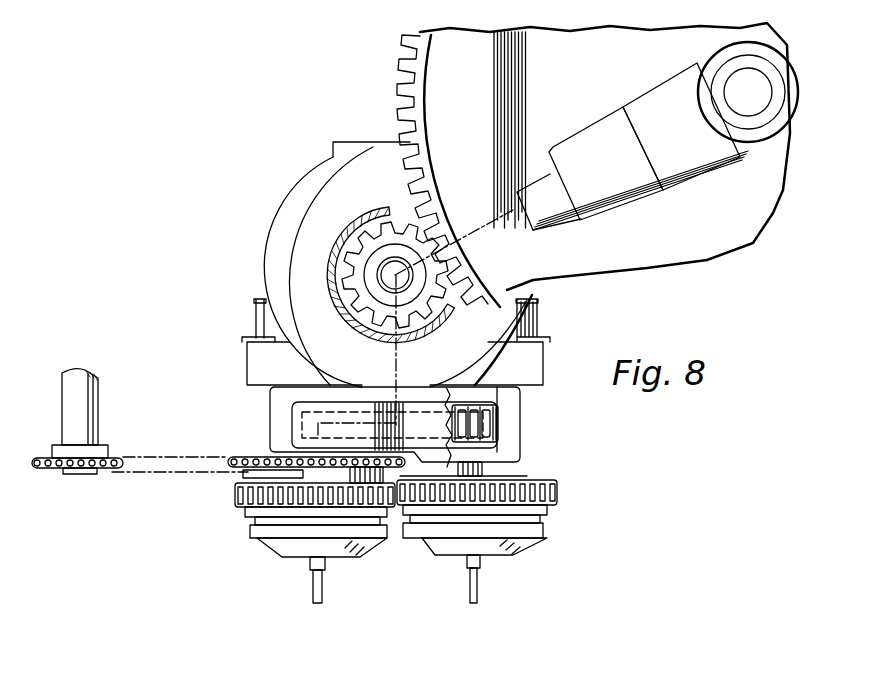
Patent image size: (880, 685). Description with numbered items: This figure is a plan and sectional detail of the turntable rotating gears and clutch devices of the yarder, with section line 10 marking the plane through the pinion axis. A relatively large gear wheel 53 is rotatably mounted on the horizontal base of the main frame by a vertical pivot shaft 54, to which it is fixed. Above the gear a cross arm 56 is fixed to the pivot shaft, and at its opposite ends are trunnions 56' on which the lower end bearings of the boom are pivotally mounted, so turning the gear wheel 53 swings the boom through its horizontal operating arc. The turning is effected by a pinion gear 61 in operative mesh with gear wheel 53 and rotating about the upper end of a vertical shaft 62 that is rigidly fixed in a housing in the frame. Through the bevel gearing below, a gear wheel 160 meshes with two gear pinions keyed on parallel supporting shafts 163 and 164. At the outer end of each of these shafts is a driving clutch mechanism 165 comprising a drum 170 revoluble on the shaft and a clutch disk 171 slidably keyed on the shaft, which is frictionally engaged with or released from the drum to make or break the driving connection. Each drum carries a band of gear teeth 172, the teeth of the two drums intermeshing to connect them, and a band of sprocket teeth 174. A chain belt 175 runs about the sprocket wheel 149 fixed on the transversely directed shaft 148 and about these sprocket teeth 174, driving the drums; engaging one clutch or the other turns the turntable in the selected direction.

The section line 10- 10 is at (478, 170).
The gear wheel 53 is at (398, 108).
The vertical pivot shaft 54 is at (735, 88).
The cross arm 56 is at (640, 145).
The trunnions 56' is at (553, 219).
The pinion gear 61 is at (358, 232).
The vertical shaft 62 is at (380, 272).
The transversely directed shaft 148 is at (92, 397).
The sprocket wheel 149 is at (113, 458).
The gear wheel 160 is at (497, 428).
The supporting shaft 163 is at (272, 457).
The supporting shaft 164 is at (497, 452).
The driving clutch mechanism 165 is at (282, 558).
The drum 170 is at (252, 479).
The clutch disk 171 is at (262, 540).
The band of gear teeth 172 is at (240, 503).
The band of sprocket teeth 174 is at (242, 461).
The chain belt 175 is at (152, 475).